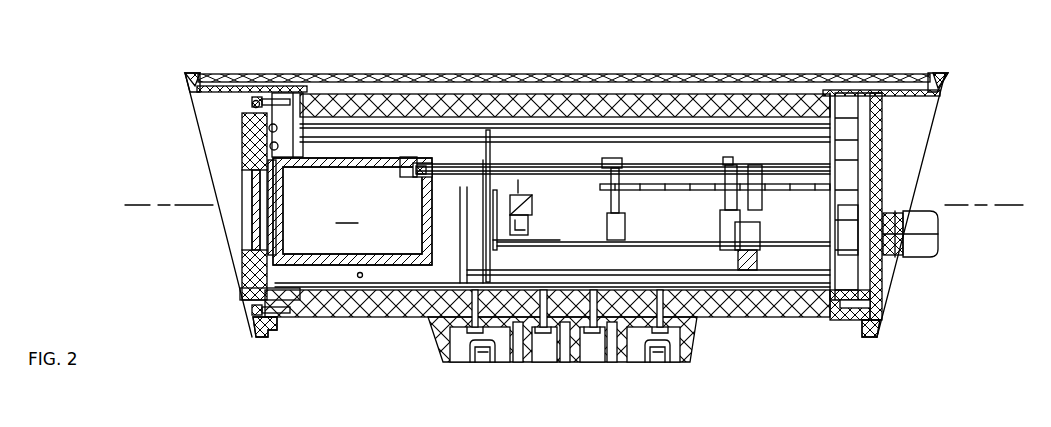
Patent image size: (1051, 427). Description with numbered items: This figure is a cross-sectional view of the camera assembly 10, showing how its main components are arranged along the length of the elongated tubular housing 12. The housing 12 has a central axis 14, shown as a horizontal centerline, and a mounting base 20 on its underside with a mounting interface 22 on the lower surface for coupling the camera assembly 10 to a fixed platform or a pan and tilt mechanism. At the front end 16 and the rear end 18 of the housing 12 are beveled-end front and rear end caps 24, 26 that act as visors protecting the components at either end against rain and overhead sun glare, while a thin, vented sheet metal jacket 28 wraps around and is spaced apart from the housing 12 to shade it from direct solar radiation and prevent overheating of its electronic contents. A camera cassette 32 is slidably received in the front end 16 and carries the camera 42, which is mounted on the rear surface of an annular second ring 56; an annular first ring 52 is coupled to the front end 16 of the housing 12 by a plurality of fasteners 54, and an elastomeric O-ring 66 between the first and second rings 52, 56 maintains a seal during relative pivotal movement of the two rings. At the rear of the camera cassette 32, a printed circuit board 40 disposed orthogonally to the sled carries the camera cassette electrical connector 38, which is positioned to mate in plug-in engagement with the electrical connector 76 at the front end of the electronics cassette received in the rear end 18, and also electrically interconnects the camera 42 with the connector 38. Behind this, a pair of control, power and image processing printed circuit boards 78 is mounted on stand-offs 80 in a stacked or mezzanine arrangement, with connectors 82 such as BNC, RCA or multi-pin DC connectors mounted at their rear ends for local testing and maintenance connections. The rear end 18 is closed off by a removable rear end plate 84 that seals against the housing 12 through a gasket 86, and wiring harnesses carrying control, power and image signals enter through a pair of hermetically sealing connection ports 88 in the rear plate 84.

The camera assembly 10 is at (396, 340).
The housing 12 is at (768, 318).
The central axis 14 is at (136, 205).
The front end 16 is at (248, 262).
The rear end 18 is at (878, 276).
The mounting base 20 is at (700, 334).
The mounting interface 22 is at (651, 362).
The front end cap 24 is at (210, 128).
The rear end cap 26 is at (924, 114).
The sun shield jacket 28 is at (612, 74).
The camera cassette 32 is at (322, 318).
The camera cassette electrical connector 38 is at (505, 212).
The printed circuit board 40 is at (490, 152).
The camera 42 is at (352, 218).
The first ring 52 is at (256, 298).
The fasteners 54 is at (292, 104).
The second ring 56 is at (258, 147).
The O-ring 66 is at (254, 108).
The electrical connector 76 is at (532, 206).
The printed circuit board 78 is at (768, 163).
The stand-offs 80 is at (622, 208).
The connectors 82 is at (752, 240).
The rear end plate 84 is at (878, 302).
The gasket 86 is at (856, 320).
The connection ports 88 is at (938, 238).